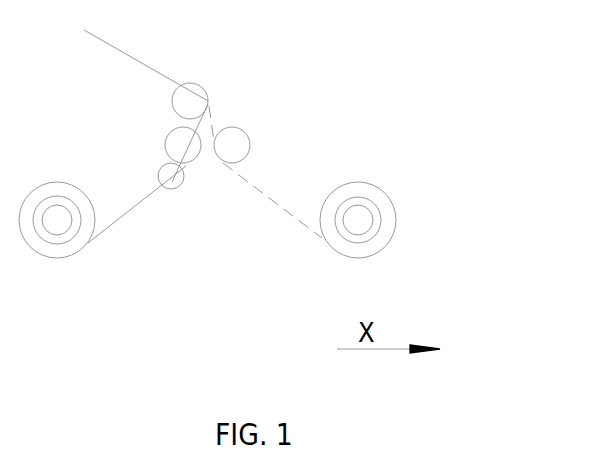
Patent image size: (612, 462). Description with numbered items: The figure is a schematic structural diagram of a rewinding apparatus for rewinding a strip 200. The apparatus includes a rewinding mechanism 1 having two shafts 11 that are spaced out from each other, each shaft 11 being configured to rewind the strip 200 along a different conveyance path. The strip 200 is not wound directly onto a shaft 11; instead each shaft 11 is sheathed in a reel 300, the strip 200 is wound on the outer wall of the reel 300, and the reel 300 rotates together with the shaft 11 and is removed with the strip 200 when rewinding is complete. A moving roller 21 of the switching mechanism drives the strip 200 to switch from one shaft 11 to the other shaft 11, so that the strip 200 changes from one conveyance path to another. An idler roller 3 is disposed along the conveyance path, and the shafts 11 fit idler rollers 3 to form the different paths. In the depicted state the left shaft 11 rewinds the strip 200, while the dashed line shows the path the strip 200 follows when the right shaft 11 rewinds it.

The rewinding mechanism 1 is at (207, 287).
The shaft 11 is at (67, 235).
The moving roller 21 is at (162, 167).
The idler roller 3 is at (237, 140).
The strip 200 is at (147, 59).
The reel 300 is at (390, 225).